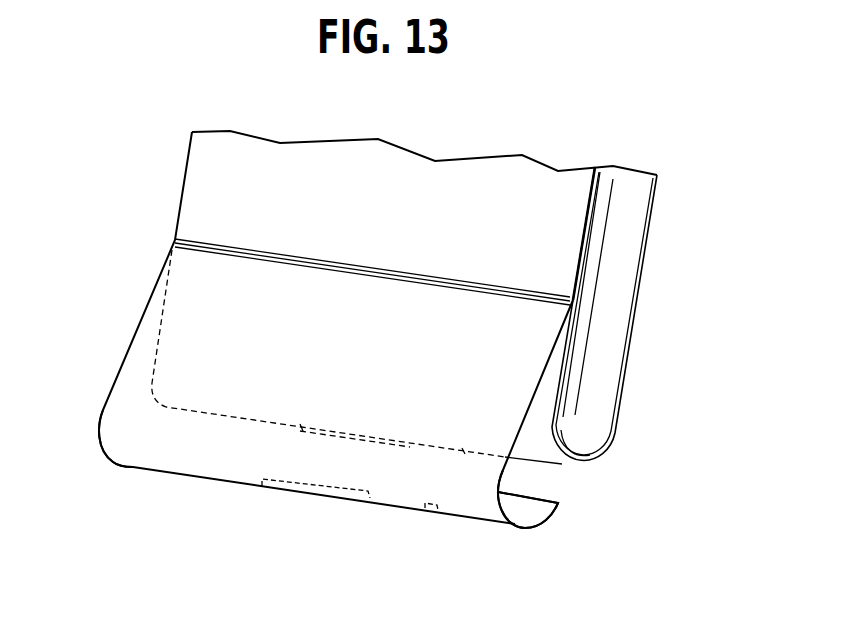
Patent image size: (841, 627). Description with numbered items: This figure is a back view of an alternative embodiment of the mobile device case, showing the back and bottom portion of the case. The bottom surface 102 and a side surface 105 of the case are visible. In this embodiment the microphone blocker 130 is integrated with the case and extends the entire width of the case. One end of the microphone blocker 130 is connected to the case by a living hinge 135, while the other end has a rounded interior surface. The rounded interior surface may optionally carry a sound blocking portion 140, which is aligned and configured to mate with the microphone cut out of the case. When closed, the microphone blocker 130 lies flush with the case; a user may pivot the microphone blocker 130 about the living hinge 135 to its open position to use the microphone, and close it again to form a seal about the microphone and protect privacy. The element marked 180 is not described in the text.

The bottom surface 102 is at (187, 455).
The side surface 105 is at (613, 270).
The microphone blocker 130 is at (140, 438).
The living hinge 135 is at (312, 254).
The sound blocking portion 140 is at (312, 493).
The rolled lip 180 is at (530, 510).